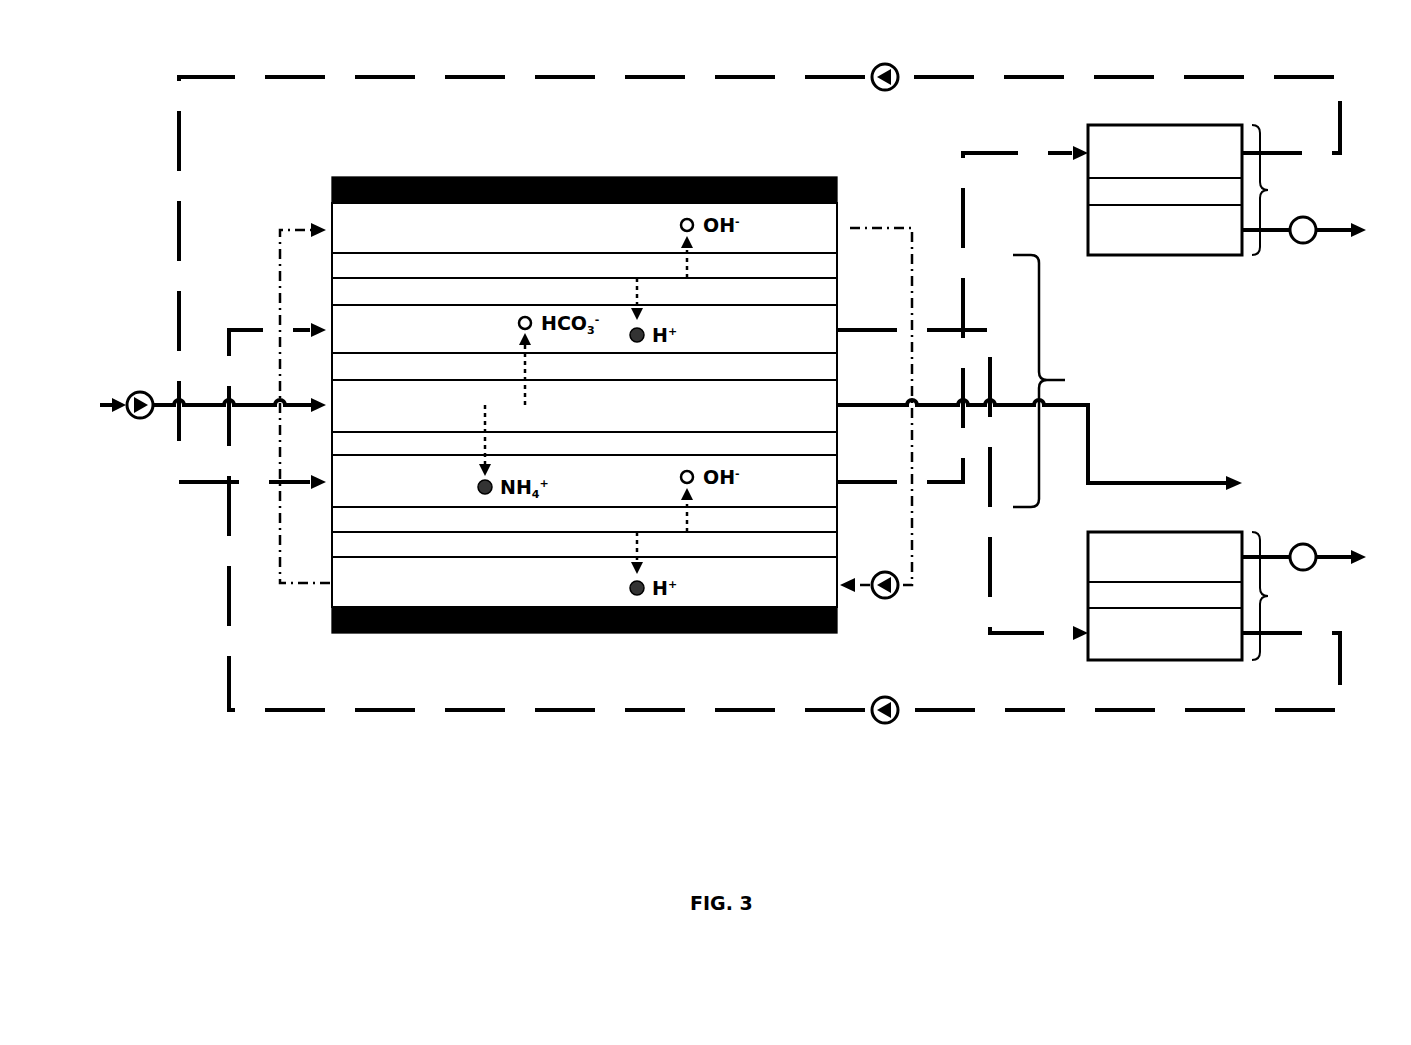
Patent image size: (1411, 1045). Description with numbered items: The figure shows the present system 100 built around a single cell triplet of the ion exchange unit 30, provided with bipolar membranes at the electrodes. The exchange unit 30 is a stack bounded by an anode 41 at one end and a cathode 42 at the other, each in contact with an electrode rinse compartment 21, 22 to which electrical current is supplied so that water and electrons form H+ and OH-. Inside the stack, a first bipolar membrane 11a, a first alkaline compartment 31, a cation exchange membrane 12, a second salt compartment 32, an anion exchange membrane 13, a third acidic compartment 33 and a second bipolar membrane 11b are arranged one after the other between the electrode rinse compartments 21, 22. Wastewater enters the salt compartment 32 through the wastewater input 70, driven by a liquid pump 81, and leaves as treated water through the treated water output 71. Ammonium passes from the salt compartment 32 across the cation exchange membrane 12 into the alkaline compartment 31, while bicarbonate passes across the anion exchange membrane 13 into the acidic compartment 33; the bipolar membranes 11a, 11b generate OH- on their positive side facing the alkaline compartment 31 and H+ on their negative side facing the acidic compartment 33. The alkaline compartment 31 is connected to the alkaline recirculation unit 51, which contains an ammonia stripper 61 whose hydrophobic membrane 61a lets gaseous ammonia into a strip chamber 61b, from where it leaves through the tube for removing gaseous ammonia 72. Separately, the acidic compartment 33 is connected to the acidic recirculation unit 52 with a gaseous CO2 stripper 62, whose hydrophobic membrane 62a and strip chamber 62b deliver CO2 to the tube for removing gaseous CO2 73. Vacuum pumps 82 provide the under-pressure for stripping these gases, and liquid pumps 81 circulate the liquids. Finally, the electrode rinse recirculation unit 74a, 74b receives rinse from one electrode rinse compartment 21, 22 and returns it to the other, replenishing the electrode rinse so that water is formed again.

The present system 100 is at (706, 390).
The anode 41 is at (584, 177).
The cathode 42 is at (584, 633).
The electrode rinse compartment (anodic) 21 is at (584, 228).
The electrode rinse compartment (cathodic) 22 is at (584, 582).
The first alkaline compartment 31 is at (584, 481).
The second salt compartment 32 is at (584, 406).
The third acidic compartment 33 is at (584, 329).
The first bipolar membrane 11a is at (562, 279).
The second bipolar membrane 11b is at (562, 532).
The cation exchange membrane 12 is at (565, 444).
The anion exchange membrane 13 is at (565, 366).
The ion exchange unit 30 is at (1062, 381).
The alkaline recirculation unit 51 is at (759, 270).
The acidic recirculation unit 52 is at (784, 528).
The ammonia stripper 61 is at (1186, 190).
The hydrophobic membrane 61a is at (1143, 191).
The strip chamber 61b is at (1143, 230).
The gaseous CO2 stripper 62 is at (1186, 596).
The hydrophobic membrane 62a is at (1143, 595).
The strip chamber 62b is at (1143, 557).
The wastewater input 70 is at (95, 405).
The treated water output 71 is at (1058, 447).
The tube for removing gaseous ammonia 72 is at (1323, 230).
The tube for removing gaseous CO2 73 is at (1323, 557).
The electrode rinse recirculation unit 74a is at (855, 228).
The electrode rinse recirculation unit 74b is at (305, 414).
The liquid pump 81 is at (513, 391).
The vacuum pump 82 is at (1303, 393).